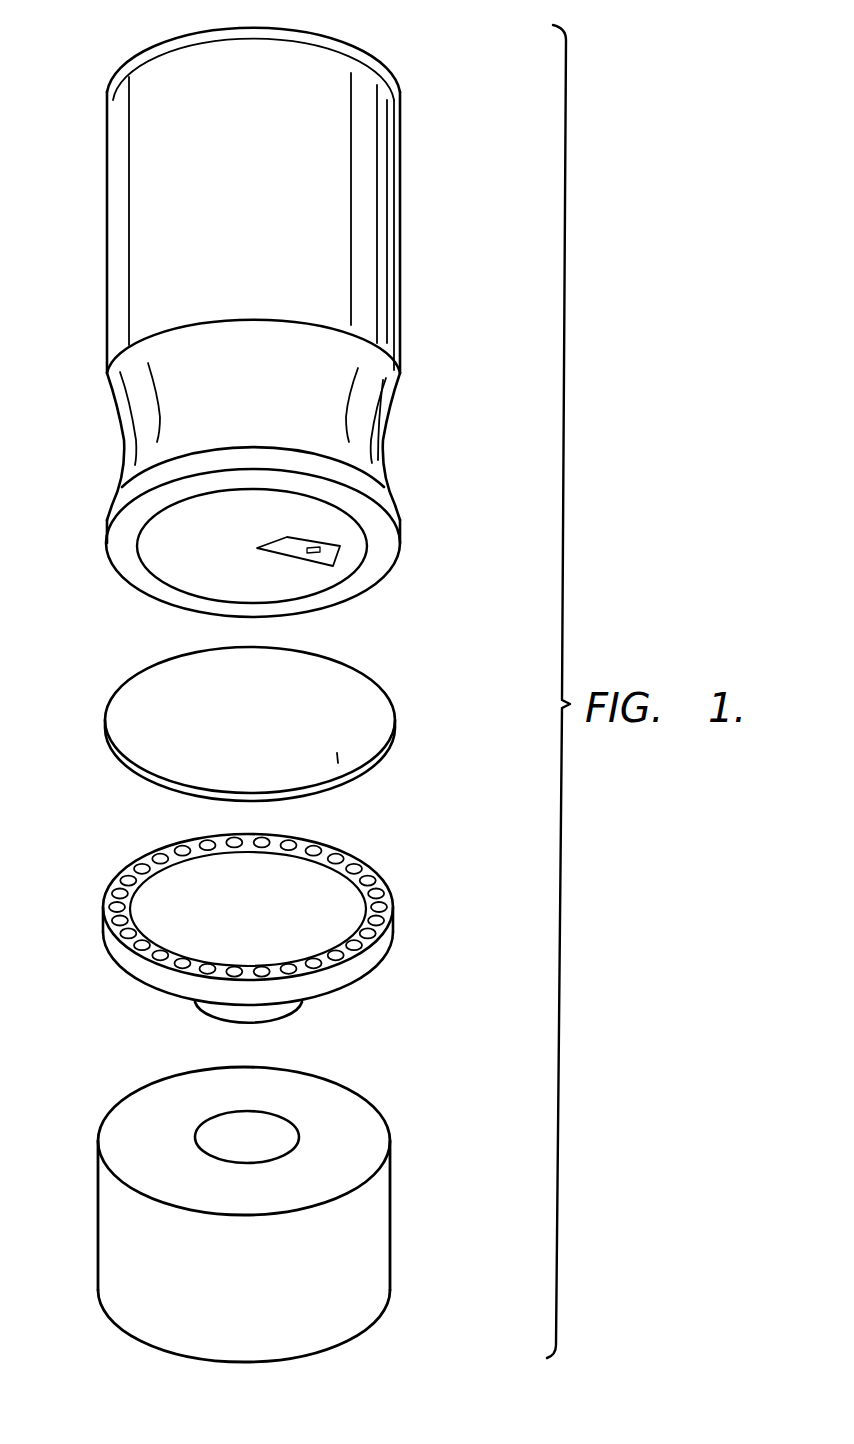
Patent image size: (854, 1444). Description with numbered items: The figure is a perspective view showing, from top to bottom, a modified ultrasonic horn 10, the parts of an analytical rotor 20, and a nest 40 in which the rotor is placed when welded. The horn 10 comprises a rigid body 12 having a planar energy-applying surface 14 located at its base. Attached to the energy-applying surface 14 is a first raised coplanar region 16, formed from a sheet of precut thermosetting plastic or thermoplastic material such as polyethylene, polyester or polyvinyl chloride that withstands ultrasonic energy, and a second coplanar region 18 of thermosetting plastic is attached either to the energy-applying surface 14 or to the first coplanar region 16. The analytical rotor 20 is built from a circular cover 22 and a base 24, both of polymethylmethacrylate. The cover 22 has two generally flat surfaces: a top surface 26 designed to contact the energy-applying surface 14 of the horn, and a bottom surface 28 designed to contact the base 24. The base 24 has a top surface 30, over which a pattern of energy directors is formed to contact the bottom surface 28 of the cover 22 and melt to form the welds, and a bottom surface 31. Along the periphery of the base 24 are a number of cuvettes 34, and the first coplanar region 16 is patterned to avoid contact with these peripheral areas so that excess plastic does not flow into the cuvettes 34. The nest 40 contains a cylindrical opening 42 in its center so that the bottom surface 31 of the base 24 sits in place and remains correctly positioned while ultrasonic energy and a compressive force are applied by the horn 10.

The modified ultrasonic horn 10 is at (400, 130).
The rigid body 12 is at (400, 315).
The energy-applying surface 14 is at (400, 553).
The first raised coplanar region 16 is at (137, 557).
The second coplanar region 18 is at (330, 567).
The analytical rotor 20 is at (107, 735).
The cover 22 is at (395, 728).
The base 24 is at (393, 922).
The top surface 26 is at (347, 702).
The bottom surface 28 is at (338, 760).
The top surface 30 is at (335, 892).
The bottom surface 31 is at (300, 1003).
The cuvettes 34 is at (138, 947).
The nest 40 is at (385, 1205).
The cylindrical opening 42 is at (275, 1140).